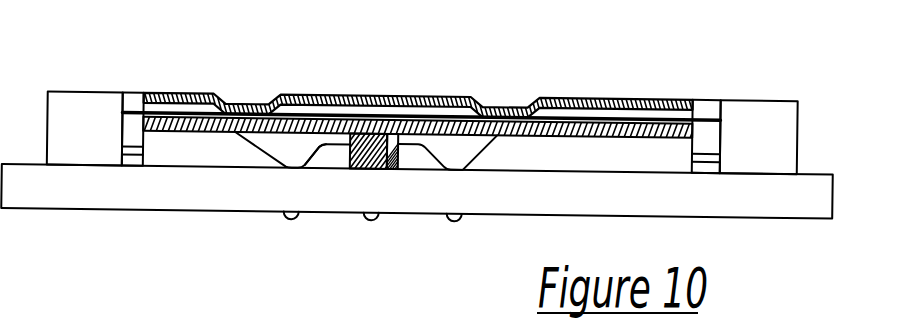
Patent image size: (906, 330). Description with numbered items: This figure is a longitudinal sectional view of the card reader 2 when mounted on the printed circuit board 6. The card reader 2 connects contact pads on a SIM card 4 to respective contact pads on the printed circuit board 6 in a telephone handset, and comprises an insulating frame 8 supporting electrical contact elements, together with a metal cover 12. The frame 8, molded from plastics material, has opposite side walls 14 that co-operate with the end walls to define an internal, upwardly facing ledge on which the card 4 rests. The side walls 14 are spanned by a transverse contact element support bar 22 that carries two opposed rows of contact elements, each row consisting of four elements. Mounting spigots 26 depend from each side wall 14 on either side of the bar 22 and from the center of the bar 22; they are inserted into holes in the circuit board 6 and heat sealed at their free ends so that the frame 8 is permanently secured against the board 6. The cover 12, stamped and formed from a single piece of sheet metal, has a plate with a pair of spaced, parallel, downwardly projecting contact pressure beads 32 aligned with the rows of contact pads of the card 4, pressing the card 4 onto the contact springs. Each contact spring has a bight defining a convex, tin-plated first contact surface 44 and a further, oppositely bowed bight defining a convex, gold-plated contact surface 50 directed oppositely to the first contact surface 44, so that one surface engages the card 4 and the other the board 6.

The card reader 2 is at (154, 50).
The SIM card 4 is at (583, 120).
The printed circuit board 6 is at (812, 175).
The insulating frame 8 is at (812, 90).
The metal cover 12 is at (645, 91).
The side wall 14 is at (47, 122).
The contact element support bar 22 is at (387, 164).
The mounting spigot 26 is at (292, 216).
The contact pressure bead 32 is at (247, 100).
The first contact surface 44 is at (320, 143).
The contact surface 50 is at (394, 151).